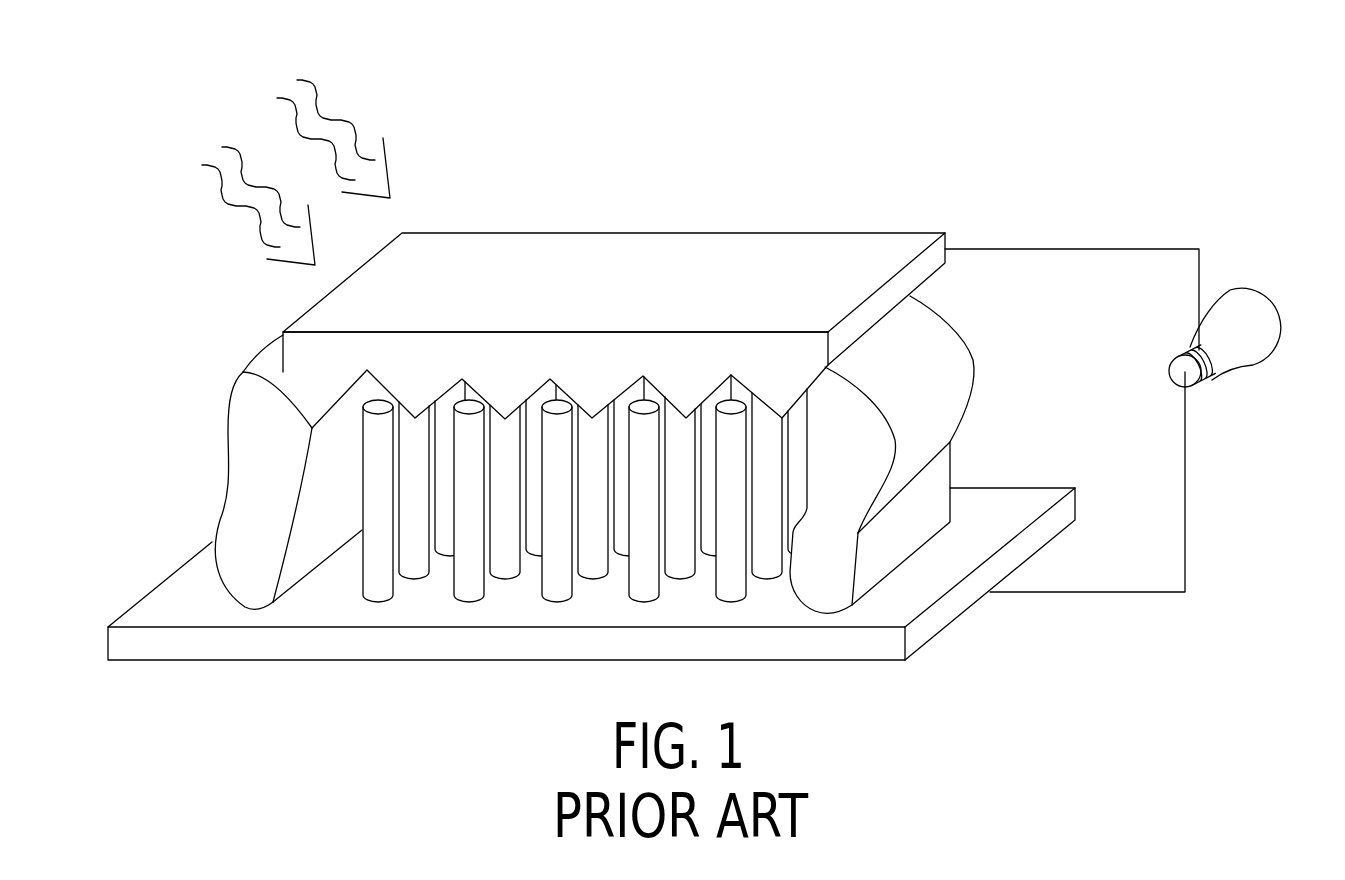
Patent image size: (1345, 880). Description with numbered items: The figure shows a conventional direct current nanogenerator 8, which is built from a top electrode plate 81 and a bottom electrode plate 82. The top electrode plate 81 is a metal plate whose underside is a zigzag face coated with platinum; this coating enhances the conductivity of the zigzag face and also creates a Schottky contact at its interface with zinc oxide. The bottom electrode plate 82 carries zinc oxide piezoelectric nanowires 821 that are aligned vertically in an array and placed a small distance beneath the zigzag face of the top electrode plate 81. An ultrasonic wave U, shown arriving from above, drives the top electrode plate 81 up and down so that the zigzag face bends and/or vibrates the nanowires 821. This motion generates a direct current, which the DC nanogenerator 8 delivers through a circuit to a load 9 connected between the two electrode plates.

The DC nanogenerator 8 is at (595, 415).
The top electrode plate 81 is at (850, 247).
The bottom electrode plate 82 is at (925, 627).
The piezoelectric nanowires 821 is at (380, 445).
The load 9 is at (1252, 305).
The ultrasonic wave U is at (340, 120).